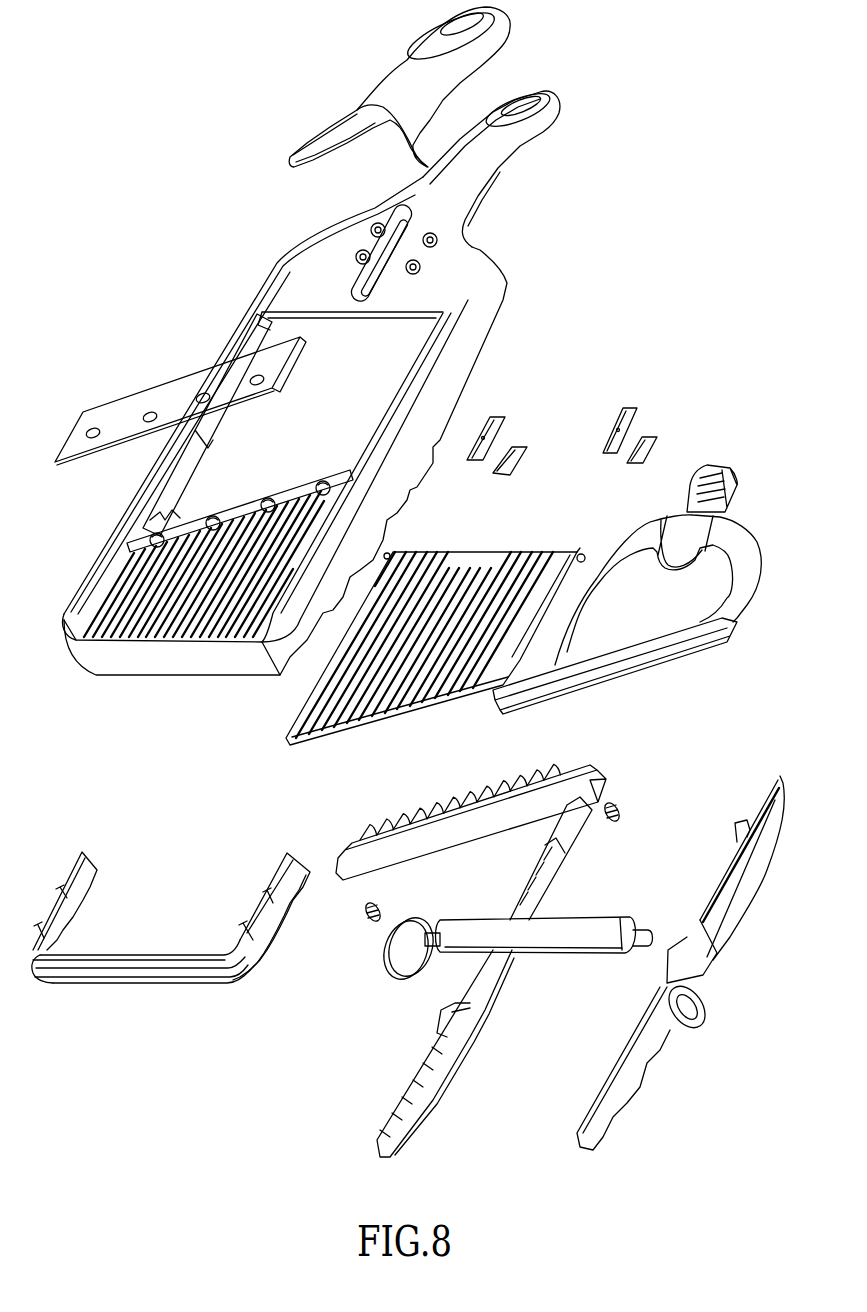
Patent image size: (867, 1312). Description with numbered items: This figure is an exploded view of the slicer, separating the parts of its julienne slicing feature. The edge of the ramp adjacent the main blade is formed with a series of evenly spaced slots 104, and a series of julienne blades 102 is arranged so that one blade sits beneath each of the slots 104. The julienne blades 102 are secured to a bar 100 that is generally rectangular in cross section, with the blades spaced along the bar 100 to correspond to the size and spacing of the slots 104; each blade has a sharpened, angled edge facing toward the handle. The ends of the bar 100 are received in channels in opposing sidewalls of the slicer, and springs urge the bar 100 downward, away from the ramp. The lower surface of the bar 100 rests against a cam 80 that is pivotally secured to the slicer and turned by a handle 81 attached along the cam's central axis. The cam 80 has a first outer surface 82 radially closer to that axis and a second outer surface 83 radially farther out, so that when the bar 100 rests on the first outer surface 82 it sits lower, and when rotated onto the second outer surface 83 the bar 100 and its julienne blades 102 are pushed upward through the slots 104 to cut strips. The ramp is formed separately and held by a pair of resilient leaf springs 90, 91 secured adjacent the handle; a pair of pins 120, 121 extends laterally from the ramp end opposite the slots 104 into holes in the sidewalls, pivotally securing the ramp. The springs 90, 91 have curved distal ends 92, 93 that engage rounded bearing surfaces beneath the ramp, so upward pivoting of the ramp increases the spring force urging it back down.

The cam 80 is at (470, 952).
The handle 81 is at (392, 948).
The first outer surface 82 is at (557, 957).
The second outer surface 83 is at (580, 917).
The spring 90 is at (497, 410).
The spring 91 is at (628, 408).
The distal end 92 is at (468, 460).
The distal end 93 is at (612, 457).
The bar 100 is at (607, 783).
The julienne blades 102 is at (473, 783).
The slots 104 is at (335, 742).
The pin 120 is at (590, 555).
The pin 121 is at (393, 550).